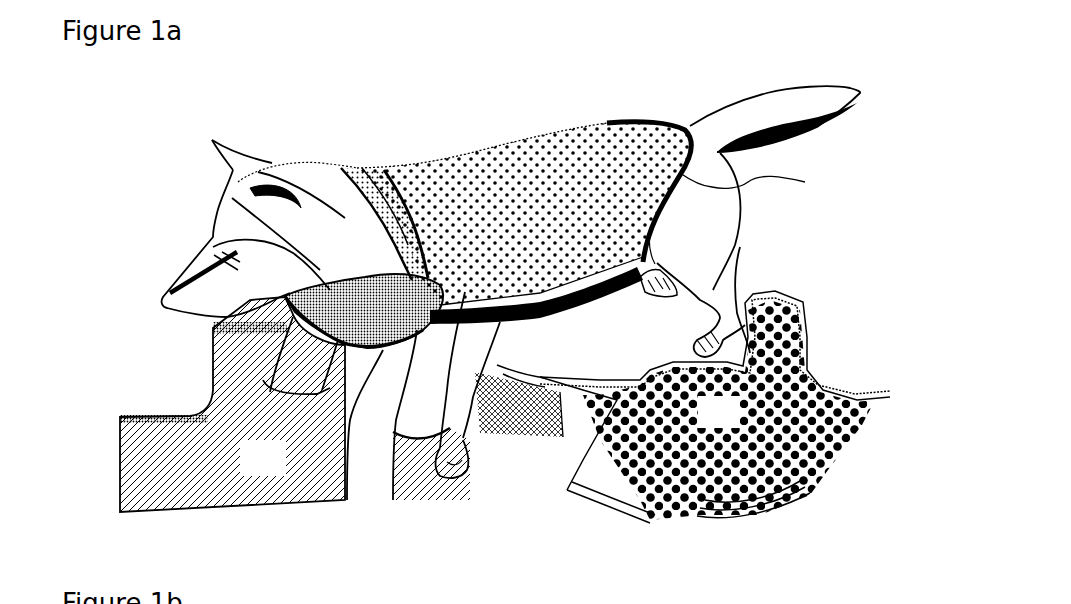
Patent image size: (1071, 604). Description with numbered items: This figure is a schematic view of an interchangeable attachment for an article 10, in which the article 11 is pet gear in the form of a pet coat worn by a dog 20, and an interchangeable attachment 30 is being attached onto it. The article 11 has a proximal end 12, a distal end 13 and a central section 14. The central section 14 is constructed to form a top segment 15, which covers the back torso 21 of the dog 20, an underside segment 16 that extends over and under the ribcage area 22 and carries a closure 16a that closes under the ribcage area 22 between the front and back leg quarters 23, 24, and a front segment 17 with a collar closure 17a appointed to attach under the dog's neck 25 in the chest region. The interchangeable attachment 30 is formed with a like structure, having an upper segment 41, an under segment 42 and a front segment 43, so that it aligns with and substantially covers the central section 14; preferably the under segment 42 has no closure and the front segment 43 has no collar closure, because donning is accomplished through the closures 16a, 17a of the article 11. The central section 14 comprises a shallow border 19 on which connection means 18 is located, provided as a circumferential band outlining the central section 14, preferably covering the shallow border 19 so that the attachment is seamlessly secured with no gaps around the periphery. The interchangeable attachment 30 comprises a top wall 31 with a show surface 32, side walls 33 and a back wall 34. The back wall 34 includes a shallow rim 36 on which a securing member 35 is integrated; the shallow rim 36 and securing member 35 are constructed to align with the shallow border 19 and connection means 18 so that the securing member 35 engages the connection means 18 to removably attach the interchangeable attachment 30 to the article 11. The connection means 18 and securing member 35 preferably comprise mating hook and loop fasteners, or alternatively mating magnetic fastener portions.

The interchangeable attachment for an article 10 is at (235, 101).
The article 11 is at (316, 430).
The proximal end 12 is at (348, 168).
The distal end 13 is at (704, 120).
The central section 14 is at (450, 157).
The top segment 15 is at (583, 128).
The underside segment 16 is at (563, 309).
The closure 16a is at (602, 306).
The front segment 17 is at (204, 499).
The collar closure 17a is at (213, 423).
The connection means 18 is at (345, 430).
The shallow border 19 is at (345, 500).
The pet/dog 20 is at (358, 232).
The back torso 21 is at (483, 157).
The ribcage area 22 is at (713, 268).
The front leg quarters 23 is at (463, 447).
The back leg quarters 24 is at (710, 220).
The neck 25 is at (213, 247).
The interchangeable attachment 30 is at (533, 160).
The top wall 31 is at (637, 124).
The show surface 32 is at (570, 160).
The side walls 33 is at (761, 183).
The back wall 34 is at (306, 183).
The securing member 35 is at (578, 492).
The shallow rim 36 is at (470, 455).
The upper segment 41 is at (406, 168).
The under segment 42 is at (522, 425).
The front segment 43 is at (420, 420).